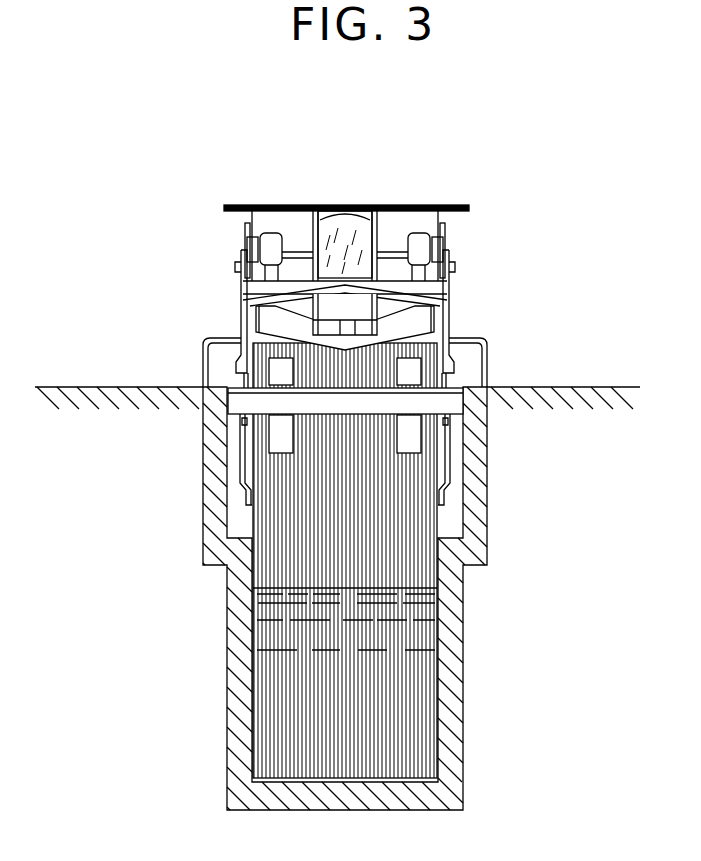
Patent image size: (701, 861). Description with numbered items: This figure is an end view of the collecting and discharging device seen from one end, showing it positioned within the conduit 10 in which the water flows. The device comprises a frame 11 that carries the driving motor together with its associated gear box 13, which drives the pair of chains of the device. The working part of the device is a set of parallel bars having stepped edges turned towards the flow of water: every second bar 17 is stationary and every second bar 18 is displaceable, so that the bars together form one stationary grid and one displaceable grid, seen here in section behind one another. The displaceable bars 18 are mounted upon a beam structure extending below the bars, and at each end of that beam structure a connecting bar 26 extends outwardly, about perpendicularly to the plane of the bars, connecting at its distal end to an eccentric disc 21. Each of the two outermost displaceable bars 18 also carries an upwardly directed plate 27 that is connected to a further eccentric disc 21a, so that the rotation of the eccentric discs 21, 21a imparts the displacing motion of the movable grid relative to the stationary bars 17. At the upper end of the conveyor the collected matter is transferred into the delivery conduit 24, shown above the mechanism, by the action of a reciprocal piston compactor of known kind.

The conduit 10 is at (242, 522).
The frame 11 is at (211, 340).
The gear box 13 is at (331, 238).
The stationary bar 17 is at (385, 702).
The displaceable bar 18 is at (403, 718).
The eccentric disc 21 is at (240, 423).
The eccentric disc 21a is at (247, 237).
The delivery conduit 24 is at (396, 206).
The connecting bar 26 is at (242, 470).
The upwardly directed plate 27 is at (250, 302).